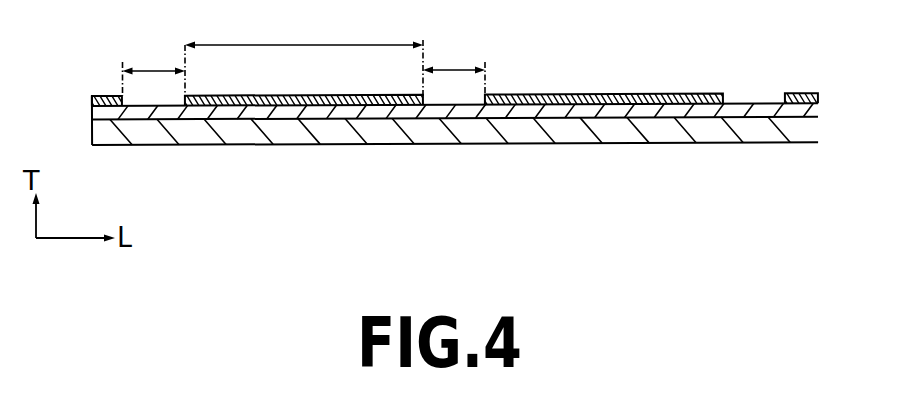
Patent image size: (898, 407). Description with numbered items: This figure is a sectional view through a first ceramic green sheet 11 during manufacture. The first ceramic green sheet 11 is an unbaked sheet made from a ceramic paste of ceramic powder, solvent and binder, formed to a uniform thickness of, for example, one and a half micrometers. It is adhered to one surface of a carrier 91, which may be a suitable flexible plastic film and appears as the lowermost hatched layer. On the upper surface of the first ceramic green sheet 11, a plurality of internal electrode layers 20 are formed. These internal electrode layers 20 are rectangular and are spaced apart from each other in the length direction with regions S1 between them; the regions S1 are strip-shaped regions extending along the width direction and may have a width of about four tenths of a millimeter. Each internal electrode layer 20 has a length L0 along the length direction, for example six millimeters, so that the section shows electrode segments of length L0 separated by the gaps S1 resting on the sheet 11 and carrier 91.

The first ceramic green sheet 11 is at (95, 116).
The internal electrode layers 20 is at (610, 93).
The carrier 91 is at (98, 135).
The regions S1 is at (457, 69).
The length L0 is at (305, 44).